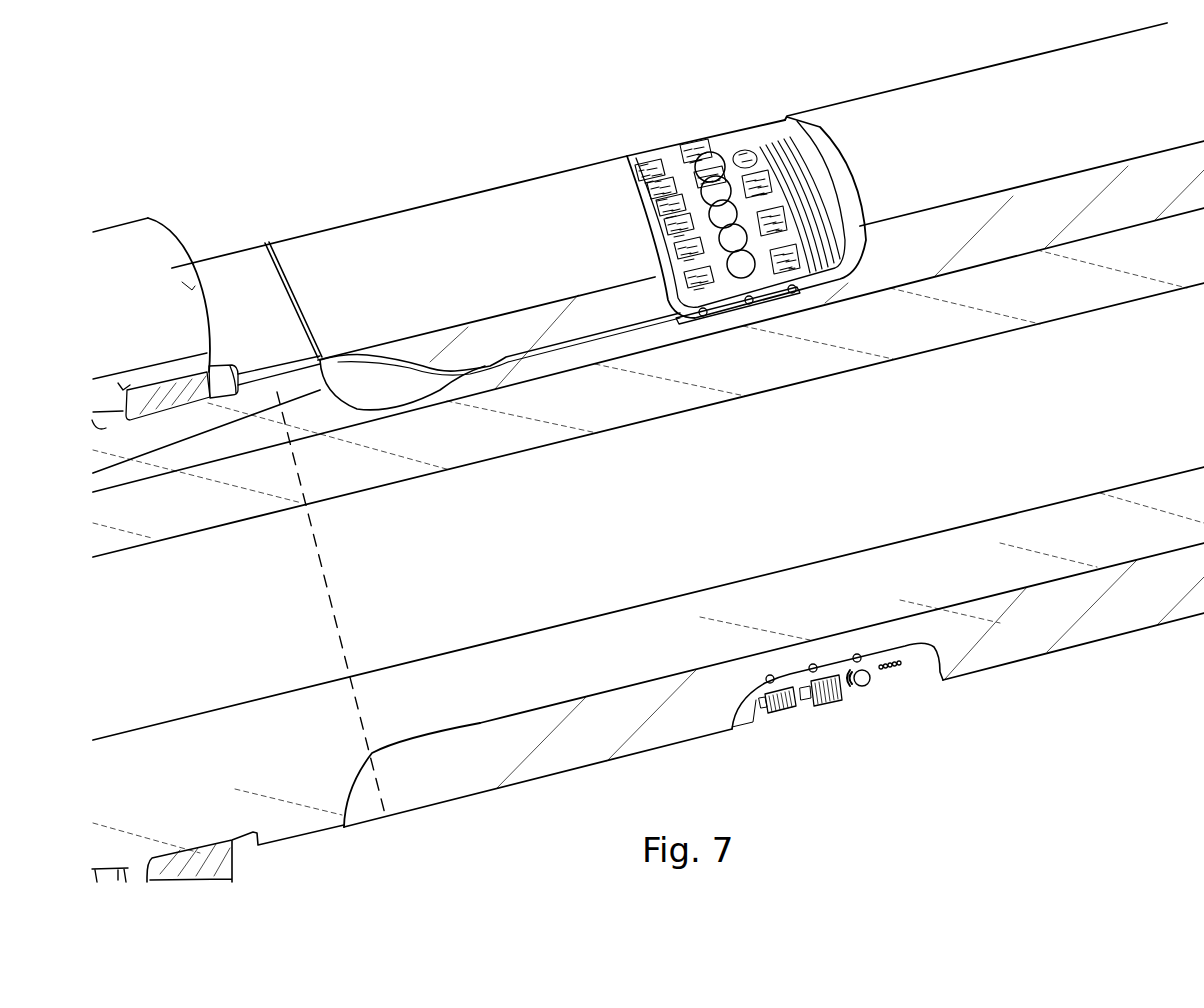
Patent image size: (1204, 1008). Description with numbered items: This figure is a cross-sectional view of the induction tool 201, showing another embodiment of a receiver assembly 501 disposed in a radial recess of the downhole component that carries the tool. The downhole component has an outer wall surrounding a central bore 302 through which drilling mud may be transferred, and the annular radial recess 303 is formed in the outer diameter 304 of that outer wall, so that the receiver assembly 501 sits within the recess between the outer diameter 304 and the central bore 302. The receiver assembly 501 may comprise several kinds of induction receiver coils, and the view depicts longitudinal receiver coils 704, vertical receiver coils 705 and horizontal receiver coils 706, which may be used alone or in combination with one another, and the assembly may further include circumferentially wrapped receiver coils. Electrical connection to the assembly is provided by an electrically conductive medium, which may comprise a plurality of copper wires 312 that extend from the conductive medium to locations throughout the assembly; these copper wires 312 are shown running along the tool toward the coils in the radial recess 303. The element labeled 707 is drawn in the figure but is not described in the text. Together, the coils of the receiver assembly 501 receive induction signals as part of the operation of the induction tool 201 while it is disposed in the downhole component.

The induction tool 201 is at (323, 172).
The annular radial recess 303 is at (640, 225).
The receiver assembly 501 is at (788, 118).
The copper wires 312 is at (445, 398).
The outer diameter 304 is at (331, 612).
The central bore 302 is at (498, 564).
The longitudinal receiver coils 704 is at (782, 712).
The vertical receiver coils 705 is at (830, 705).
The horizontal receiver coils 706 is at (863, 686).
The fourth component 707 is at (897, 670).